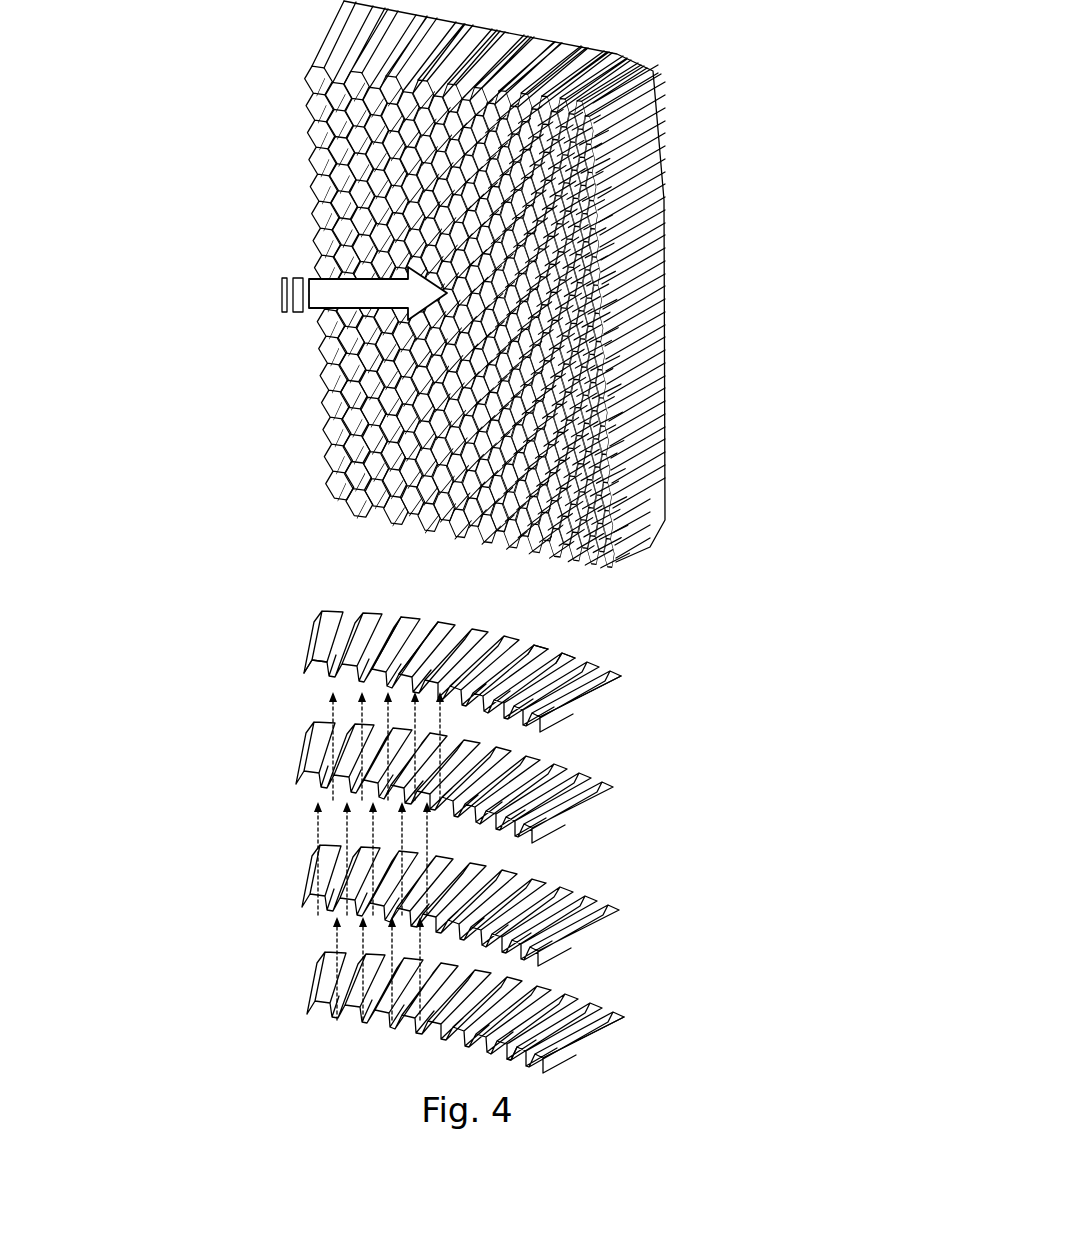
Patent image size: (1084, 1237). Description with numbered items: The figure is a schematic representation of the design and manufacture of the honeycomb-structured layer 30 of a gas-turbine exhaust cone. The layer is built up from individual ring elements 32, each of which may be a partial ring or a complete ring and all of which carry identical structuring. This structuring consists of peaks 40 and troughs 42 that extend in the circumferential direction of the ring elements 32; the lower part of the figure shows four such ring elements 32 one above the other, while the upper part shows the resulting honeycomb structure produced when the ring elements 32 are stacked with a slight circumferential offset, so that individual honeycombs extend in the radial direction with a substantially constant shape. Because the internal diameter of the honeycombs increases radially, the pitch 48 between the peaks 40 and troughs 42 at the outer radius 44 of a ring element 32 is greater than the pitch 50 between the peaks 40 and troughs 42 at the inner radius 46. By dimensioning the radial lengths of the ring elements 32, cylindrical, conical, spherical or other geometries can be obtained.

The honeycomb-structured layer 30 is at (477, 525).
The ring element 32 is at (593, 705).
The peak 40 is at (567, 670).
The trough 42 is at (395, 672).
The outer radius 44 is at (575, 688).
The inner radius 46 is at (300, 675).
The pitch 48 is at (622, 1011).
The pitch 50 is at (505, 1057).